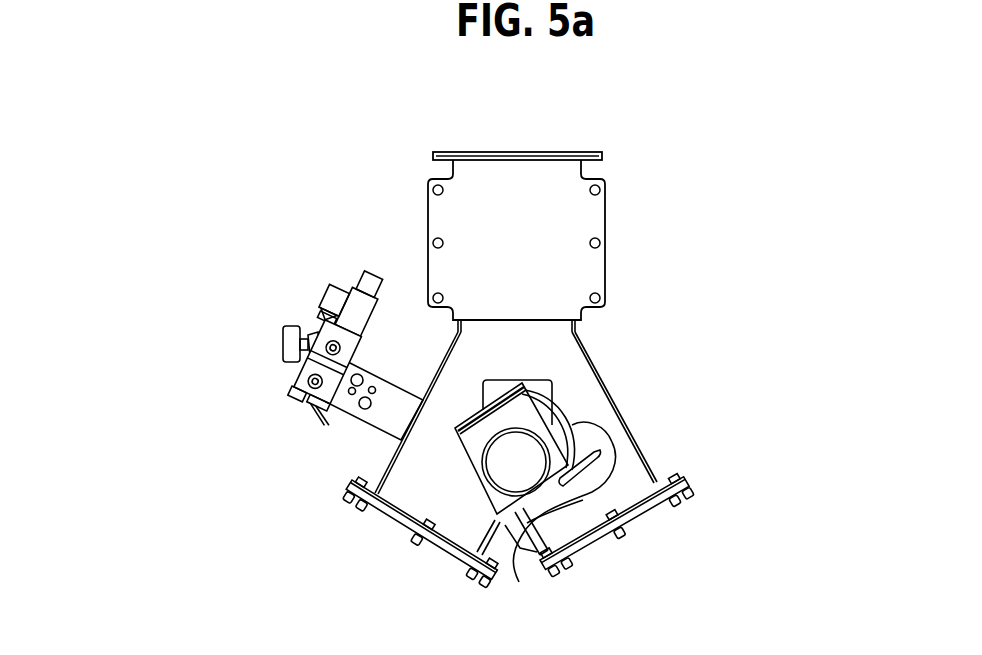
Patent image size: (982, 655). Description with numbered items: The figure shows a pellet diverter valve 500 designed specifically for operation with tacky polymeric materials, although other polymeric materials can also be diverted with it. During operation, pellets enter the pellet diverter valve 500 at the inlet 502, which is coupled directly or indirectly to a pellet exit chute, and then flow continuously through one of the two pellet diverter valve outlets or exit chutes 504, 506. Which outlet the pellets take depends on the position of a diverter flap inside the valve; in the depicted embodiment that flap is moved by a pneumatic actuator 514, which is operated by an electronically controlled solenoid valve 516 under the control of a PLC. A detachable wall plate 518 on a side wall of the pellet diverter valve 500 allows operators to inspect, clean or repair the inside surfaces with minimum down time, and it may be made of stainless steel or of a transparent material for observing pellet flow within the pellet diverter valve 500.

The pellet diverter valve 500 is at (351, 276).
The inlet 502 is at (488, 143).
The pellet diverter valve outlet 504 is at (408, 548).
The pellet diverter valve outlet 506 is at (630, 555).
The pneumatic actuator 514 is at (500, 520).
The solenoid valve 516 is at (293, 372).
The wall plate 518 is at (596, 212).